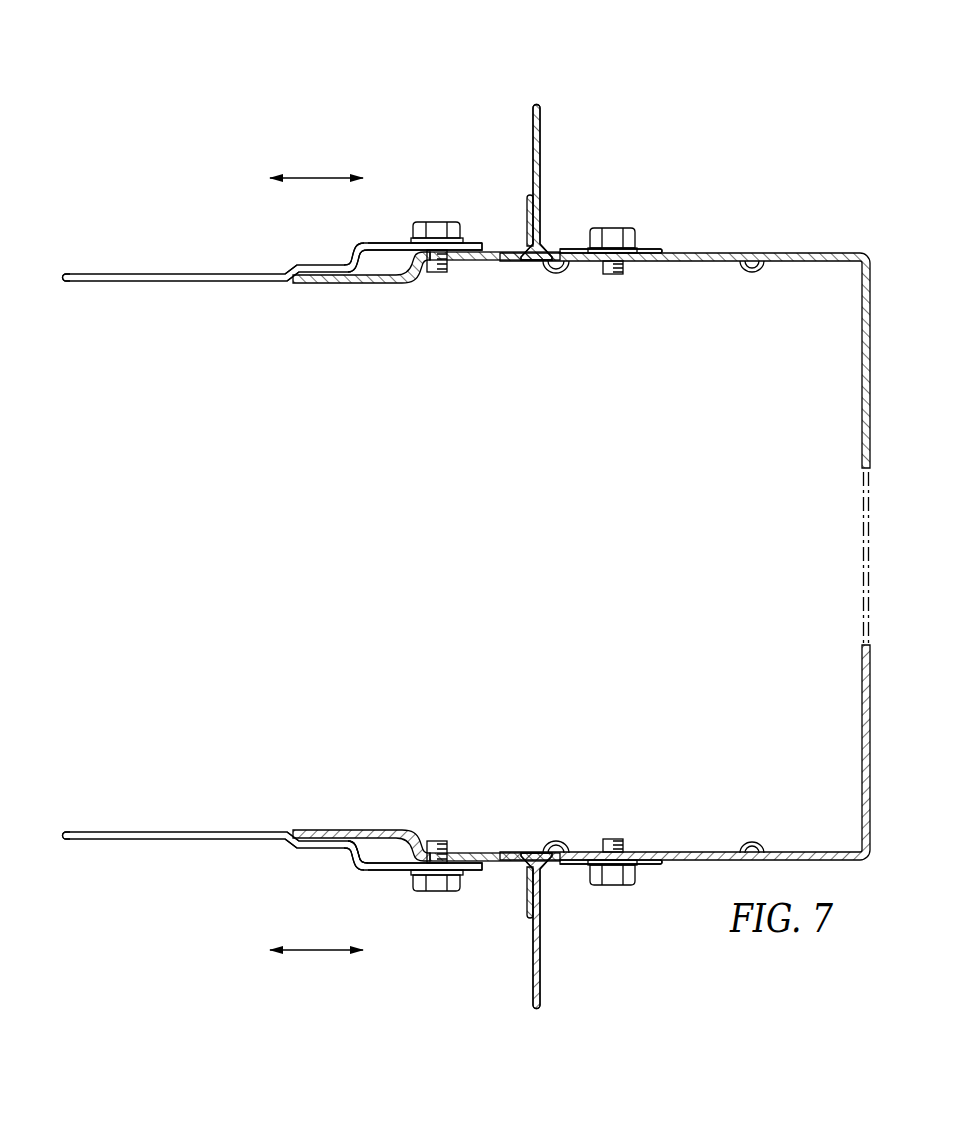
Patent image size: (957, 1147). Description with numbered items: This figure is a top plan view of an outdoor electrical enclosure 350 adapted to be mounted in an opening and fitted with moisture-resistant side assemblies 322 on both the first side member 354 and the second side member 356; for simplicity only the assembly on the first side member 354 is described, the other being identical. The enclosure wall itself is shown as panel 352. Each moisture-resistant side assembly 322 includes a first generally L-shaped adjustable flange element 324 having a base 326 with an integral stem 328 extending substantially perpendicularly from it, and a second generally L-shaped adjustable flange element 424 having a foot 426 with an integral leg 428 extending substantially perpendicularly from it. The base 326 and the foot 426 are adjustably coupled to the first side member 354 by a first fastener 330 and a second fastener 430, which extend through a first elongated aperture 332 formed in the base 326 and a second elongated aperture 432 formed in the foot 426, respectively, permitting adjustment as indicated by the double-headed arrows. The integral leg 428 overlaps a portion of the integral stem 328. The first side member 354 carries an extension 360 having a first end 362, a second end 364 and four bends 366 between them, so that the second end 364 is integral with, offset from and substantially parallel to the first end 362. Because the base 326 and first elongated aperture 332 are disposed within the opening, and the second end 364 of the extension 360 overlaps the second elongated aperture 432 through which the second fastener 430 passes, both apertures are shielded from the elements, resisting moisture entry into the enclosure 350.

The moisture-resistant side assembly 322 is at (422, 157).
The first generally L-shaped adjustable flange element 324 is at (542, 100).
The base 326 is at (577, 852).
The integral stem 328 is at (541, 131).
The first fastener 330 is at (614, 227).
The first elongated aperture 332 is at (646, 249).
The outdoor electrical enclosure 350 is at (148, 676).
The panel 352 is at (871, 738).
The first side member 354 is at (400, 813).
The second side member 356 is at (434, 288).
The extension 360 is at (150, 272).
The first end 362 is at (66, 270).
The second end 364 is at (475, 874).
The bends 366 is at (351, 262).
The second generally L-shaped adjustable flange element 424 is at (518, 174).
The foot 426 is at (503, 250).
The integral leg 428 is at (526, 204).
The second fastener 430 is at (436, 226).
The second elongated aperture 432 is at (456, 256).